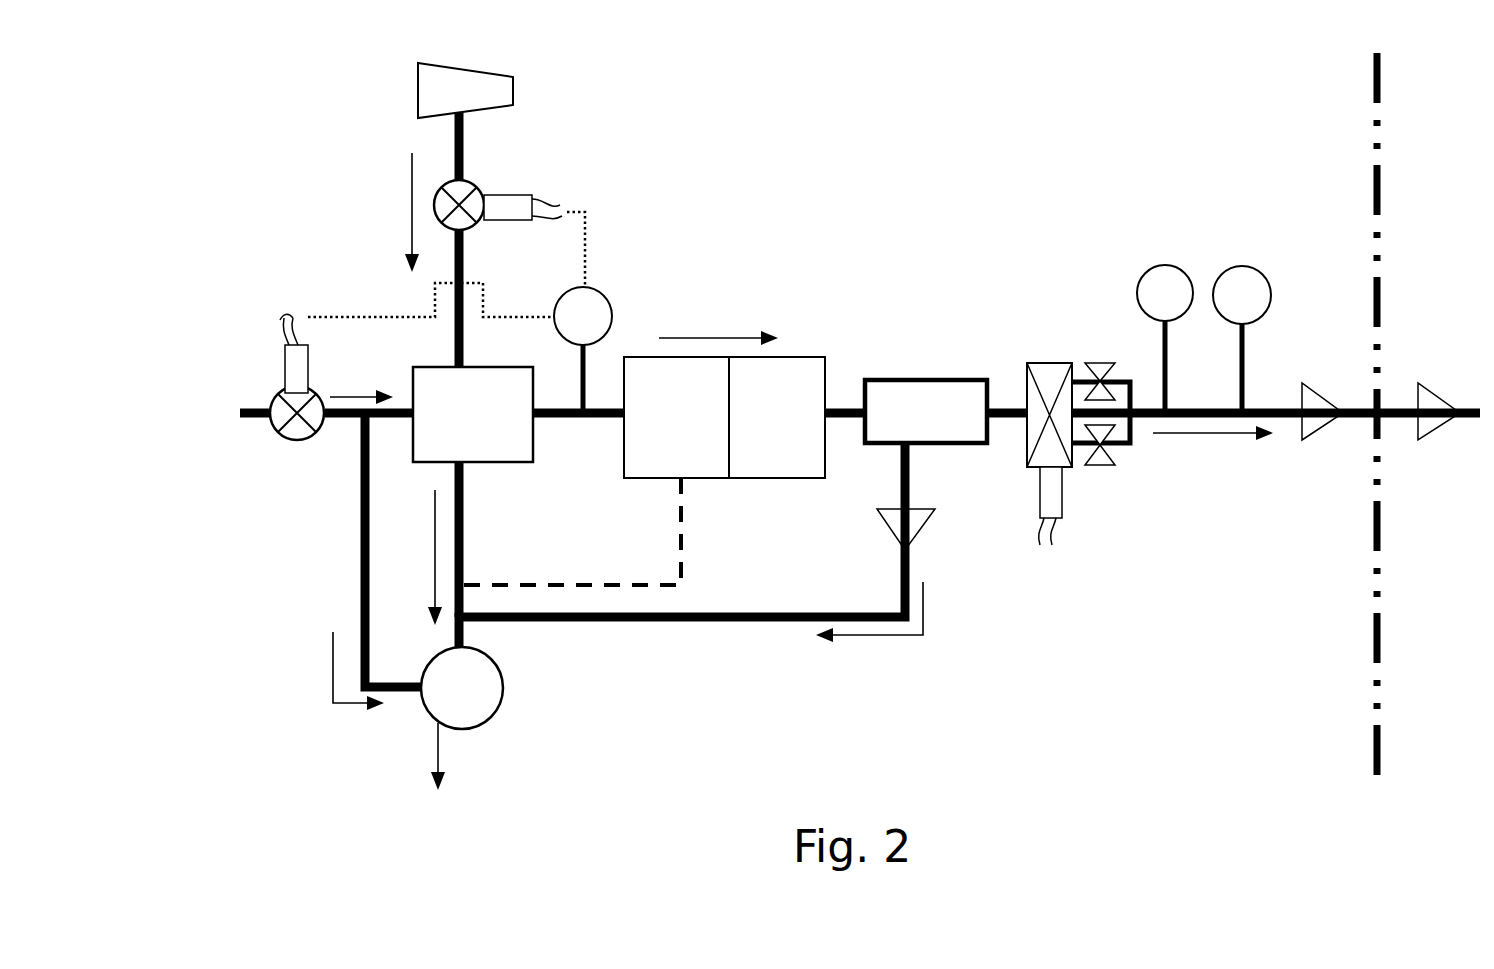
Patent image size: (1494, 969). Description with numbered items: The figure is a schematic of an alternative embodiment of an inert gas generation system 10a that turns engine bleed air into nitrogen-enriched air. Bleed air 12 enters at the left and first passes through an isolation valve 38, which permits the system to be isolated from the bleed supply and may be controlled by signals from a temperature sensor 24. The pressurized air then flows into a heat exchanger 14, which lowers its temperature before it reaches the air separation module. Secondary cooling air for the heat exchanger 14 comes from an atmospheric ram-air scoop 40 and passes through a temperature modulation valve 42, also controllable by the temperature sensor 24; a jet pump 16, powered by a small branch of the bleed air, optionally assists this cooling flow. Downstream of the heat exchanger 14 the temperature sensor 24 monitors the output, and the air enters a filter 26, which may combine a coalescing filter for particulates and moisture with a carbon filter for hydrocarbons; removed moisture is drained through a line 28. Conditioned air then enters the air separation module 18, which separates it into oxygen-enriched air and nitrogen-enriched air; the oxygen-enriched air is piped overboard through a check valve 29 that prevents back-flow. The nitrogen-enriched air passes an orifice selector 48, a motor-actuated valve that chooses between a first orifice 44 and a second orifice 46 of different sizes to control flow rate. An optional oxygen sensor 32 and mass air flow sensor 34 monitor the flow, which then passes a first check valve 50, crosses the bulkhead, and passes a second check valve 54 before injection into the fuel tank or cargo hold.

The system 10a is at (1048, 93).
The bleed air 12 is at (206, 478).
The heat exchanger 14 is at (500, 462).
The jet pump 16 is at (503, 672).
The air separation module 18 is at (912, 380).
The temperature sensor 24 is at (603, 292).
The filter 26 is at (795, 357).
The line 28 is at (683, 528).
The check valve 29 is at (925, 528).
The oxygen sensor 32 is at (1152, 265).
The mass air flow sensor 34 is at (1237, 267).
The isolation valve 38 is at (297, 441).
The scoop 40 is at (483, 72).
The temperature modulation valve 42 is at (476, 190).
The first orifice 44 is at (1098, 360).
The second orifice 46 is at (1100, 467).
The orifice selector 48 is at (1052, 360).
The first check valve 50 is at (1325, 432).
The second check valve 54 is at (1445, 432).